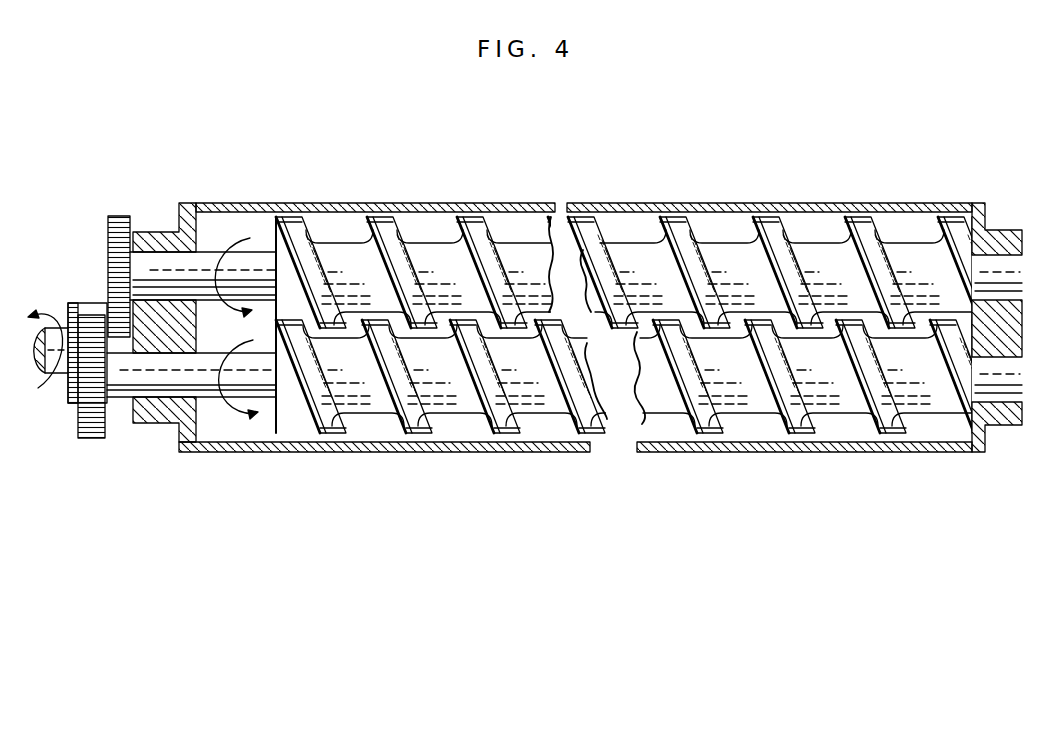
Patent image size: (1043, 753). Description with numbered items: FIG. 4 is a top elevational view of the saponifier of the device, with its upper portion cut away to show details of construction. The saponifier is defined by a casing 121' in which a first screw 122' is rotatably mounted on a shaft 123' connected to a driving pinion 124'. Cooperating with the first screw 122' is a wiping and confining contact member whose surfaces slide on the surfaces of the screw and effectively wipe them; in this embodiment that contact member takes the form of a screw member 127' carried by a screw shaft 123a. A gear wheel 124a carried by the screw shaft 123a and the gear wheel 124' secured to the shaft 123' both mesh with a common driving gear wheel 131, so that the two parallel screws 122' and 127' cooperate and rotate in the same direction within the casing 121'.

The casing 121' is at (577, 301).
The first screw 122' is at (642, 240).
The screw member 127' is at (638, 409).
The shaft 123' is at (203, 234).
The screw shaft 123a is at (215, 387).
The driving pinion 124' is at (132, 244).
The gear wheel 124a is at (92, 438).
The common driving gear wheel 131 is at (82, 300).